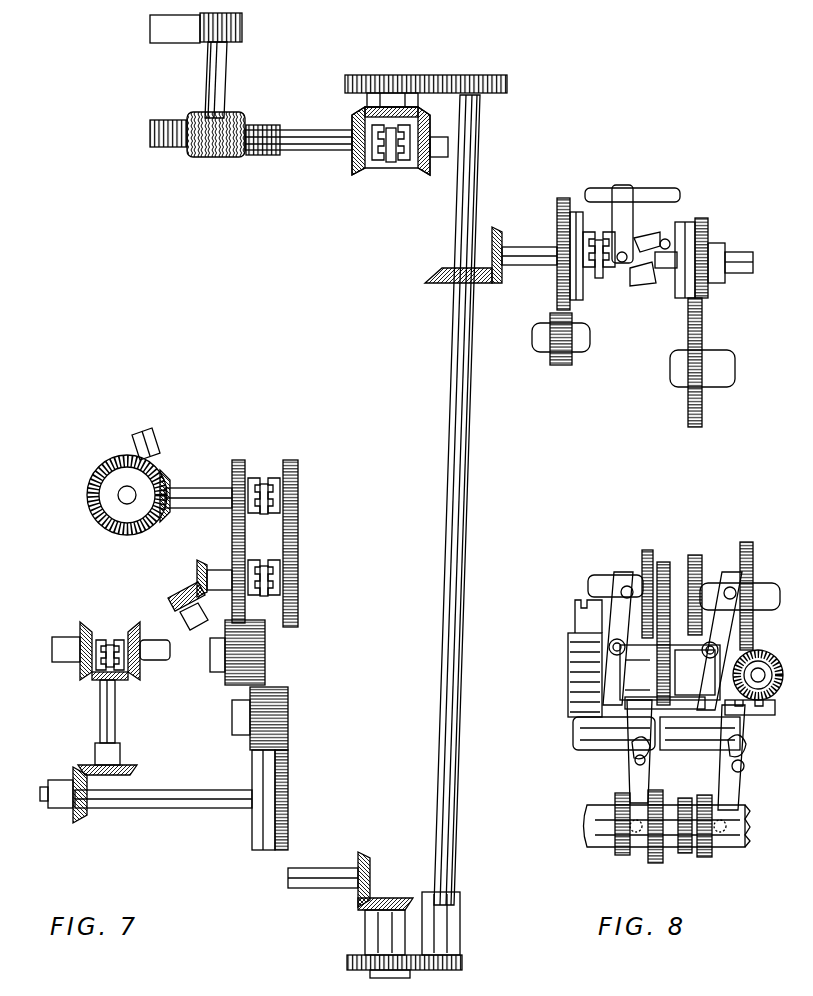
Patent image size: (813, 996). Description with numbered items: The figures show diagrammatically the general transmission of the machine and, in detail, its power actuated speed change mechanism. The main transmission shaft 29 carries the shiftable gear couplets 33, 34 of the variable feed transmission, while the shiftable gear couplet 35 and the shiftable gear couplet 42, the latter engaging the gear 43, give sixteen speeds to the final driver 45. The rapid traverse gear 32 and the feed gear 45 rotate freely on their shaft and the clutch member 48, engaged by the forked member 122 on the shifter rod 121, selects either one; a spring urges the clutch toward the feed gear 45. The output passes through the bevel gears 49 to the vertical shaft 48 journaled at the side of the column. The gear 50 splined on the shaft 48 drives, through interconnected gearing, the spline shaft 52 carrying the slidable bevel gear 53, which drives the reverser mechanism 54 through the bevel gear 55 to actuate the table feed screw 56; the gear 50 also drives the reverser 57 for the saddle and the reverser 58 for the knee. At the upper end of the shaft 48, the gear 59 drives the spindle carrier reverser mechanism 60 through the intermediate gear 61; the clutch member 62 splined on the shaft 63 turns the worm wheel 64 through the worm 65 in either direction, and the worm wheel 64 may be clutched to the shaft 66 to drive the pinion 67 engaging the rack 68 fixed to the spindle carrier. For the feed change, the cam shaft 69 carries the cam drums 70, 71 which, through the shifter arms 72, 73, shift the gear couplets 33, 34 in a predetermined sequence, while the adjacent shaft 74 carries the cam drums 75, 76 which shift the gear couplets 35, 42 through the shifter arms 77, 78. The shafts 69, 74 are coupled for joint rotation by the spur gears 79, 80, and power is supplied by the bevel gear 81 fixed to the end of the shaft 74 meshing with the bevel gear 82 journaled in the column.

In FIG. 8, the shaft 29 is at (600, 838).
In FIG. 7, the rapid traverse gear 32 is at (566, 186).
In FIG. 8, the shiftable gear couplet 33 is at (653, 863).
In FIG. 8, the shiftable gear couplet 34 is at (702, 858).
In FIG. 8, the shiftable gear couplet 35 is at (652, 542).
In FIG. 8, the shiftable gear couplet 42 is at (760, 540).
In FIG. 7, the gear 43 is at (757, 252).
In FIG. 7, the final driver 45 is at (705, 222).
In FIG. 7, the shaft 48 is at (450, 398).
In FIG. 7, the bevel gears 49 is at (497, 262).
In FIG. 7, the gear 50 is at (462, 962).
In FIG. 7, the spline shaft 52 is at (167, 806).
In FIG. 7, the bevel gear 53 is at (72, 778).
In FIG. 7, the reverser mechanism 54 is at (92, 630).
In FIG. 7, the bevel gear 55 is at (136, 768).
In FIG. 7, the table feed screw 56 is at (152, 662).
In FIG. 7, the reverser 57 is at (272, 553).
In FIG. 7, the reverser 58 is at (272, 467).
In FIG. 7, the gear 59 is at (507, 84).
In FIG. 7, the spindle carrier reverser mechanism 60 is at (400, 166).
In FIG. 7, the intermediate gear 61 is at (366, 75).
In FIG. 7, the clutch member 62 is at (376, 162).
In FIG. 7, the shaft 63 is at (310, 151).
In FIG. 7, the worm wheel 64 is at (165, 148).
In FIG. 7, the worm 65 is at (214, 158).
In FIG. 7, the shaft 66 is at (226, 74).
In FIG. 7, the pinion 67 is at (242, 26).
In FIG. 7, the rack 68 is at (150, 40).
In FIG. 8, the cam shaft 69 is at (573, 736).
In FIG. 8, the cam drum 70 is at (631, 757).
In FIG. 8, the cam drum 71 is at (745, 728).
In FIG. 8, the shifter arm 72 is at (628, 782).
In FIG. 8, the shifter arm 73 is at (740, 789).
In FIG. 8, the shaft 74 is at (665, 702).
In FIG. 8, the cam drum 75 is at (568, 664).
In FIG. 8, the cam drum 76 is at (700, 680).
In FIG. 8, the shifter arm 77 is at (613, 625).
In FIG. 8, the shifter arm 78 is at (745, 641).
In FIG. 8, the spur gear 79 is at (716, 734).
In FIG. 8, the spur gear 80 is at (657, 684).
In FIG. 8, the bevel gear 81 is at (765, 706).
In FIG. 8, the bevel gear 82 is at (790, 667).
In FIG. 7, the shifter rod 121 is at (680, 181).
In FIG. 7, the forked member 122 is at (640, 178).